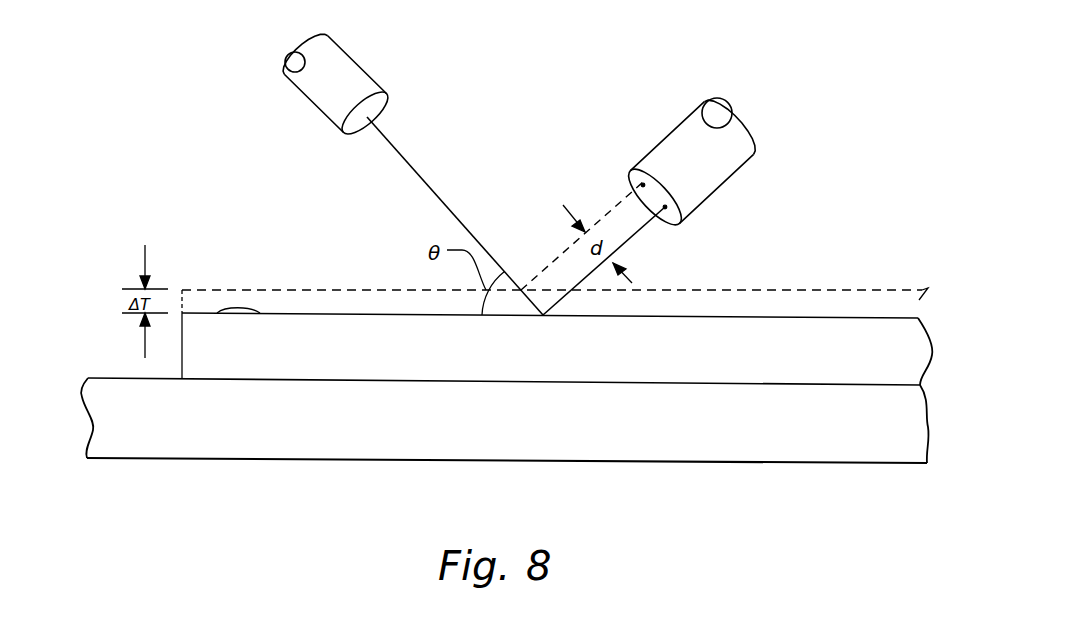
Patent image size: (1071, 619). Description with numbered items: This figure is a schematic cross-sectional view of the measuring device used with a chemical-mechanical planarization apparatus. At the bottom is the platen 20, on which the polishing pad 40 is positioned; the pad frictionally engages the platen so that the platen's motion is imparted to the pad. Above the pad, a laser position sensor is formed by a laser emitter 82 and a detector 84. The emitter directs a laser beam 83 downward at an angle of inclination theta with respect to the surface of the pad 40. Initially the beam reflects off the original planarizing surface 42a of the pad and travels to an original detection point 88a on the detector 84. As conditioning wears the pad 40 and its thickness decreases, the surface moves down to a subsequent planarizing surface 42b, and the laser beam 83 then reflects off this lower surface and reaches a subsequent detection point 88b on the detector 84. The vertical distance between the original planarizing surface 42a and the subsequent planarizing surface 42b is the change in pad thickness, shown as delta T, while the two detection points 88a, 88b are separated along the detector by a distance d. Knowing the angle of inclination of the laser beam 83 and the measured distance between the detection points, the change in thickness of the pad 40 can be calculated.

The platen 20 is at (321, 435).
The polishing pad 40 is at (321, 356).
The original planarizing surface 42a is at (273, 290).
The subsequent planarizing surface 42b is at (217, 313).
The laser emitter 82 is at (367, 73).
The laser beam 83 is at (423, 178).
The detector 84 is at (660, 142).
The original detection point 88a is at (641, 184).
The subsequent detection point 88b is at (666, 209).